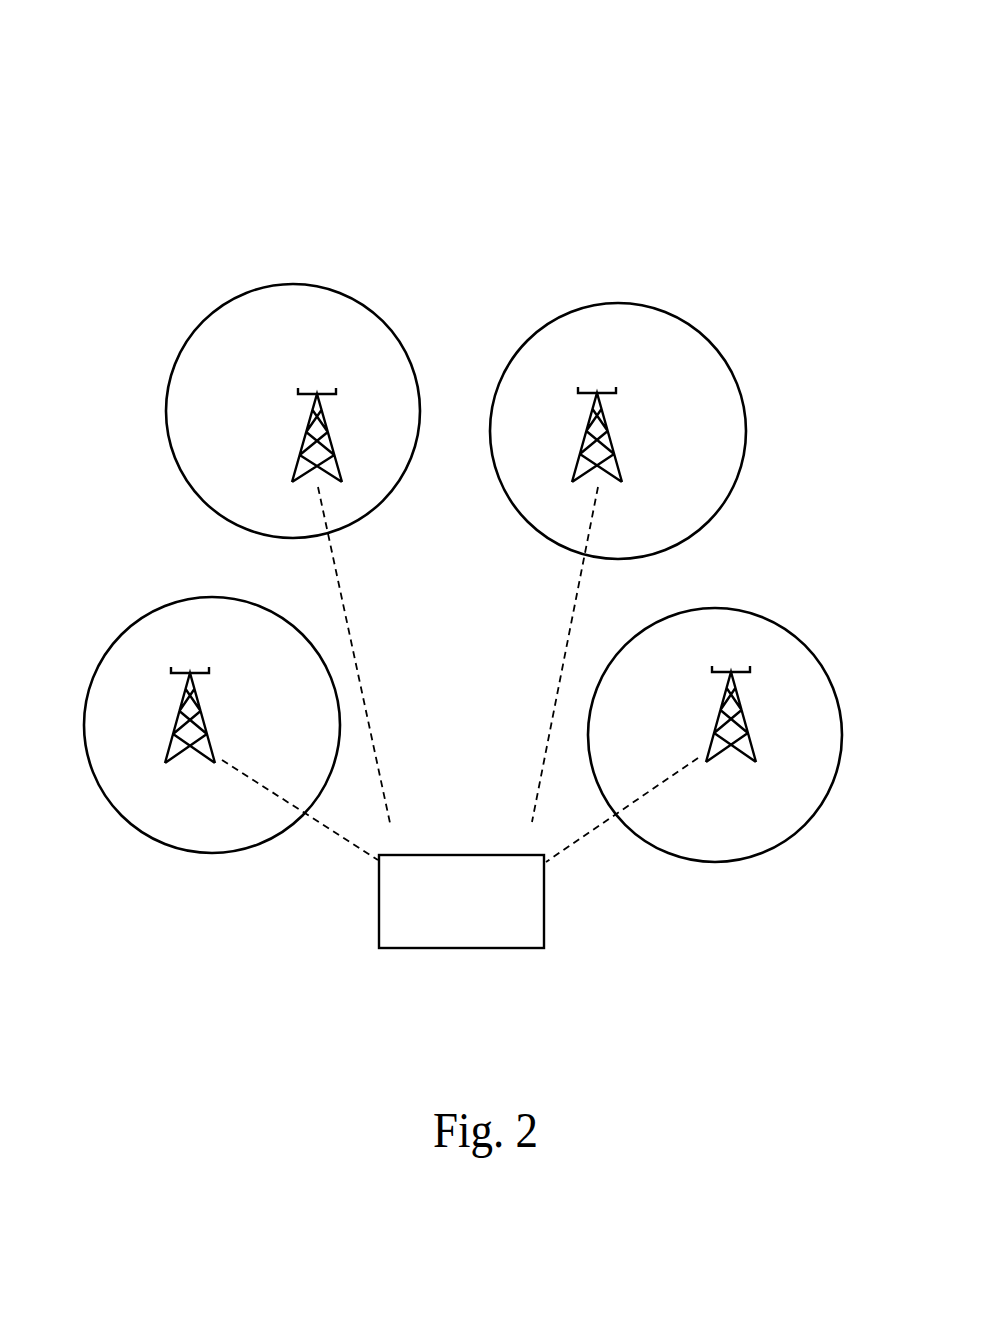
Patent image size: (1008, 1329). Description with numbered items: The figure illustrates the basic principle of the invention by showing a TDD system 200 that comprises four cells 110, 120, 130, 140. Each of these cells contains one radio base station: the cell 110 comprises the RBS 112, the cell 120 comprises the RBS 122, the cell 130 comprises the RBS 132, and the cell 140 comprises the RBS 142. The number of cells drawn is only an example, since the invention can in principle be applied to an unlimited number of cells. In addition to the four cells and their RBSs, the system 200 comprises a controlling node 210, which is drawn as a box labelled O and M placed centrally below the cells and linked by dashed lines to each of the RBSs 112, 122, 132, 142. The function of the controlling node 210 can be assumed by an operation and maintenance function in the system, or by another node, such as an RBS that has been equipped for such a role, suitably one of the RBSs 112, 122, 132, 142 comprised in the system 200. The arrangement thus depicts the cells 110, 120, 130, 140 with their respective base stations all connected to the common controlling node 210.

The TDD system 200 is at (193, 117).
The cell 110 is at (165, 335).
The RBS 112 is at (287, 383).
The cell 120 is at (617, 290).
The RBS 122 is at (645, 383).
The cell 130 is at (107, 638).
The RBS 132 is at (158, 742).
The cell 140 is at (818, 635).
The RBS 142 is at (770, 729).
The controlling node 210 is at (440, 840).